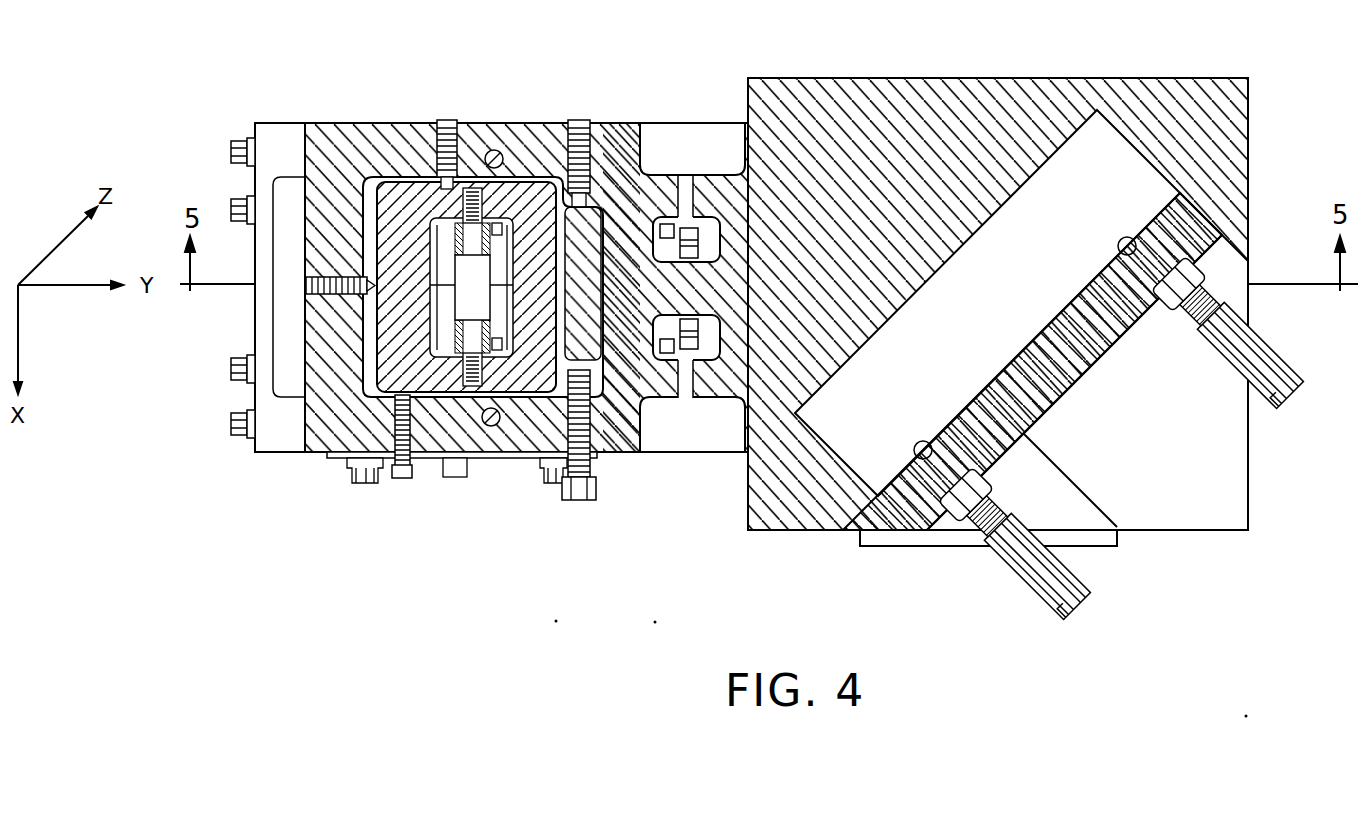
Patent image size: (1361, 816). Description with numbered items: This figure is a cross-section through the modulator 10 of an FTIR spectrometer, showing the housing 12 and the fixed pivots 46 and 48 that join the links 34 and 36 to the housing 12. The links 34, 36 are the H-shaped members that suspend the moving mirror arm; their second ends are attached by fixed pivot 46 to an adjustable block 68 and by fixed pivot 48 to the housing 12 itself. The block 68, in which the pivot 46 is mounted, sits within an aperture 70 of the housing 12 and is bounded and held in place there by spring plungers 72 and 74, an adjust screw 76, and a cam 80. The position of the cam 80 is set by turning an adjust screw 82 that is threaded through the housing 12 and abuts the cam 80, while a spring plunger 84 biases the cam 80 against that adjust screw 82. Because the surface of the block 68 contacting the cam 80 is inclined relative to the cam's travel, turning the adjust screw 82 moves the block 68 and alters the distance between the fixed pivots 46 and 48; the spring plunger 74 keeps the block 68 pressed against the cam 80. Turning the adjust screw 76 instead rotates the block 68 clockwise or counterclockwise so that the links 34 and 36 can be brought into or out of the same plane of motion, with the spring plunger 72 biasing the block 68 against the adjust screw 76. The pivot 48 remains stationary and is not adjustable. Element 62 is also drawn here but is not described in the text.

The modulator 10 is at (789, 60).
The housing 12 is at (307, 453).
The link 34 is at (416, 182).
The link 36 is at (722, 225).
The fixed pivot 46 is at (458, 218).
The fixed pivot 48 is at (688, 200).
The washer 62 is at (724, 245).
The block 68 is at (400, 187).
The aperture 70 is at (357, 192).
The spring plunger 72 is at (443, 120).
The spring plunger 74 is at (306, 290).
The adjust screw 76 is at (404, 478).
The cam 80 is at (597, 207).
The adjust screw 82 is at (574, 500).
The spring plunger 84 is at (578, 118).